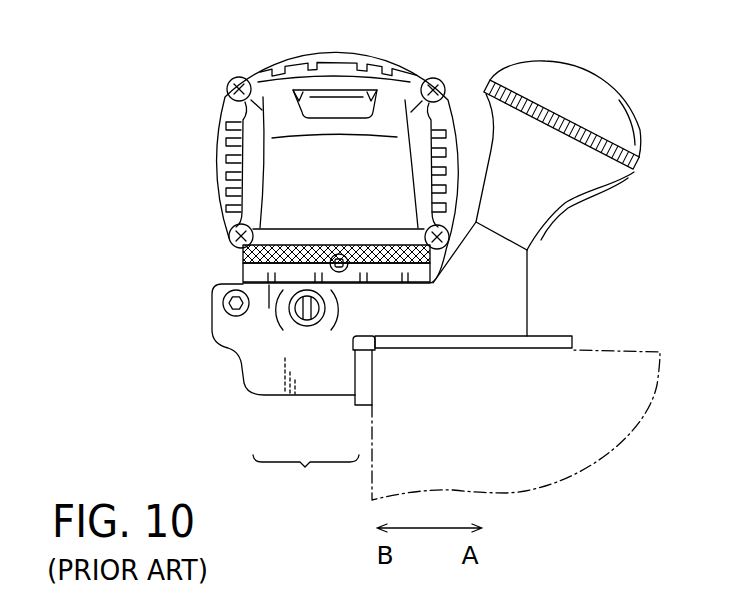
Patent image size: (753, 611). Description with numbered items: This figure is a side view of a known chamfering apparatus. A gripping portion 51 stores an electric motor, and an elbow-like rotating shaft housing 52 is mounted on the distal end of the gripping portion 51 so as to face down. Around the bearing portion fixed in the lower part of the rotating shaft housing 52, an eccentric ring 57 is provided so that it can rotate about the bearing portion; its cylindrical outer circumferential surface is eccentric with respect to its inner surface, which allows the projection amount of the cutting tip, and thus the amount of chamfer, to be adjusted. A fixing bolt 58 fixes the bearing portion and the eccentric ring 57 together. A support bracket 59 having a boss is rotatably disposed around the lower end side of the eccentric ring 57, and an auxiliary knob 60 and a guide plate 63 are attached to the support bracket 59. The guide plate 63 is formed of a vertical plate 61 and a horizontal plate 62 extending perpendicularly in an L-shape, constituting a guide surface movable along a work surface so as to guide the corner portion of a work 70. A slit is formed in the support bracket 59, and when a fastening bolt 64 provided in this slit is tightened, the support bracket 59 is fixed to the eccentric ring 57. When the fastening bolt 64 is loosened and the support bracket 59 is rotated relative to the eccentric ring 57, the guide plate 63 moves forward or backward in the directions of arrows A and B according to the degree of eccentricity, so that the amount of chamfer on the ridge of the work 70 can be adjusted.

The gripping portion 51 is at (407, 62).
The rotating shaft housing 52 is at (307, 167).
The eccentric ring 57 is at (243, 258).
The fixing bolt 58 is at (343, 271).
The support bracket 59 is at (492, 288).
The auxiliary knob 60 is at (600, 112).
The vertical plate 61 is at (363, 407).
The horizontal plate 62 is at (435, 345).
The guide plate 63 is at (306, 478).
The fastening bolt 64 is at (226, 305).
The work 70 is at (630, 368).